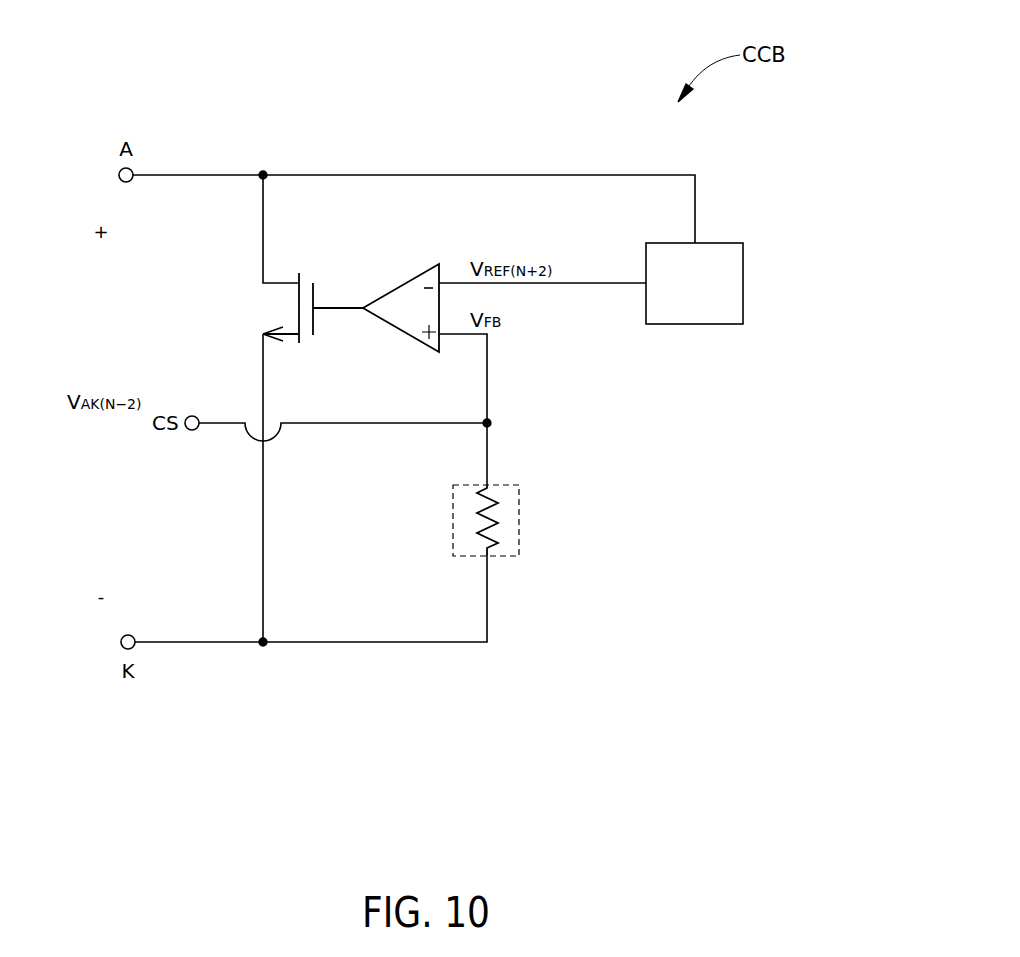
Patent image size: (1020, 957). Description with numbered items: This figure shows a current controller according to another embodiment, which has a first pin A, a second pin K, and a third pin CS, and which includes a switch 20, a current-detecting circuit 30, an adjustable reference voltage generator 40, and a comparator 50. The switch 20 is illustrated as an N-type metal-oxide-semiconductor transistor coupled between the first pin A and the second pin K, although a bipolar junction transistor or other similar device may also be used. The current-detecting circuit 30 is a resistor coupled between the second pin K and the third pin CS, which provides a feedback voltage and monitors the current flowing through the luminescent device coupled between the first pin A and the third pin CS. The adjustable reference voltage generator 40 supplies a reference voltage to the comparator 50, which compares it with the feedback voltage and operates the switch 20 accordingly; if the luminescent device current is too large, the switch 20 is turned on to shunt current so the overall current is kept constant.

The switch 20 is at (268, 311).
The current-detecting circuit 30 is at (521, 520).
The adjustable reference voltage generator 40 is at (682, 295).
The comparator 50 is at (400, 284).